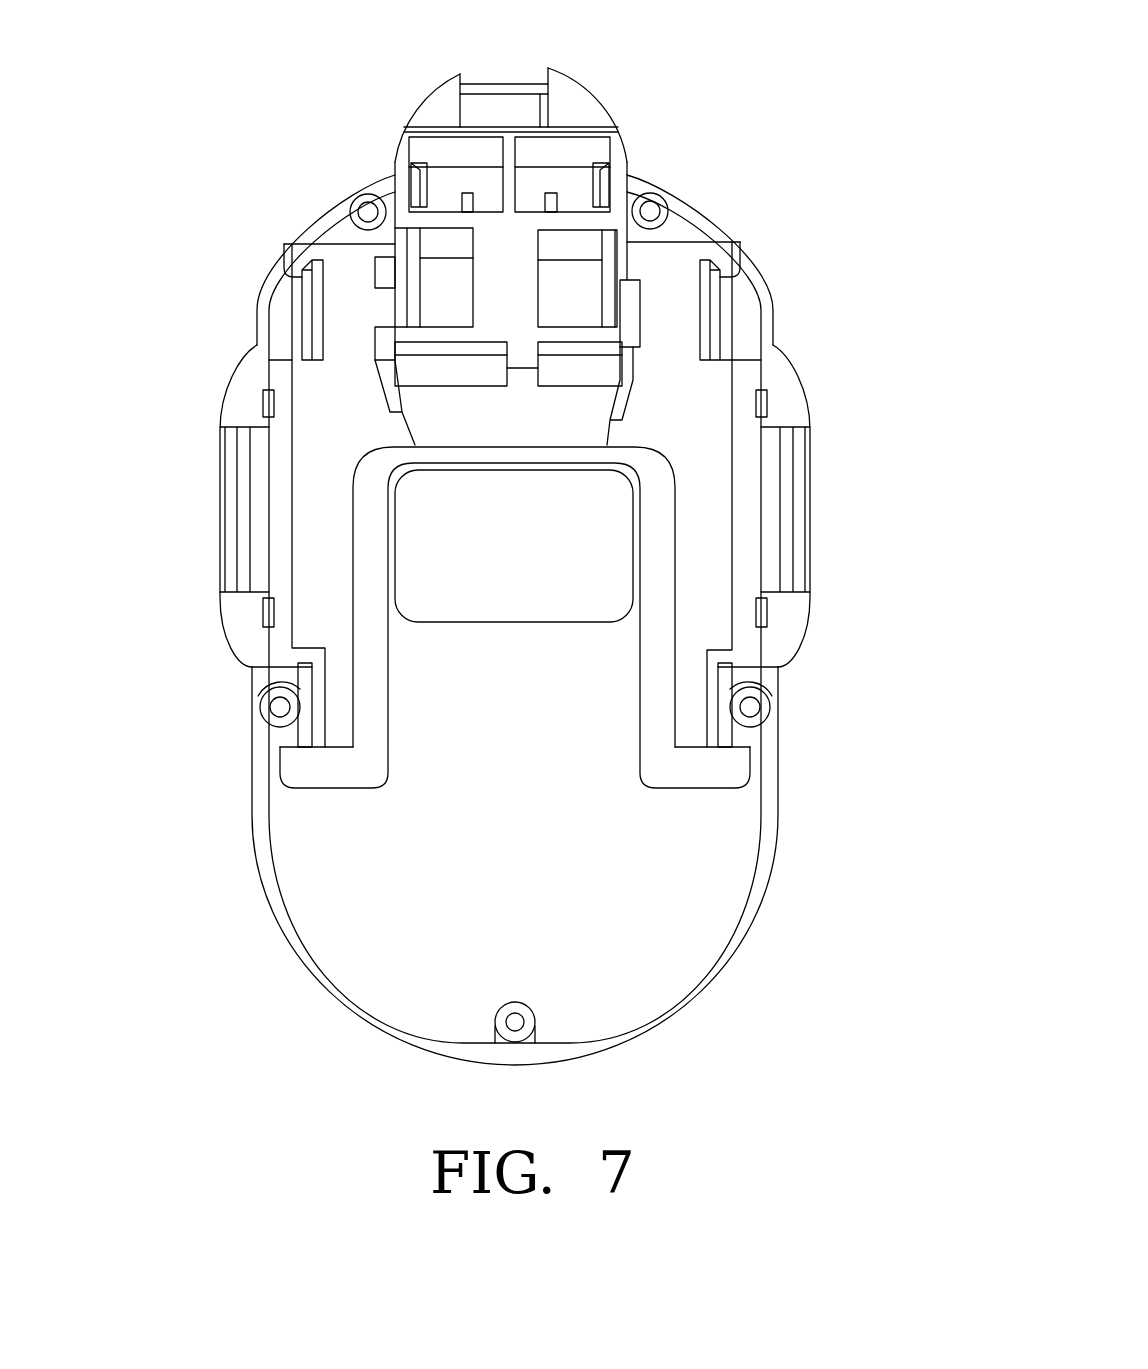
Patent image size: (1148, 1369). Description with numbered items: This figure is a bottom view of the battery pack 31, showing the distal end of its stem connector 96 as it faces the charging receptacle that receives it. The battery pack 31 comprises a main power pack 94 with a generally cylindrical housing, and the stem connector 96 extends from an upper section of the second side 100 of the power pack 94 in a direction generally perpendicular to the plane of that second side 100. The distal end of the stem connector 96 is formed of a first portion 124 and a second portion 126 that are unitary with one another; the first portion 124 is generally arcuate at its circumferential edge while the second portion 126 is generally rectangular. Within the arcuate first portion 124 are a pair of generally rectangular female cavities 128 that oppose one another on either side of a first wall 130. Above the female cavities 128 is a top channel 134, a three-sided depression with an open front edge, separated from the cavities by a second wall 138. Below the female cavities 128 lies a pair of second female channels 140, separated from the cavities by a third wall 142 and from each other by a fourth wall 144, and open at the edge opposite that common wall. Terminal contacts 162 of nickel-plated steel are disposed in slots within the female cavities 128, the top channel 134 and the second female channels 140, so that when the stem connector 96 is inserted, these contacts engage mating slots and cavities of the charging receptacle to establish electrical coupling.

The battery pack 31 is at (780, 120).
The power pack 94 is at (246, 790).
The stem connector 96 is at (616, 90).
The second side 100 is at (595, 846).
The first portion 124 is at (422, 98).
The second portion 126 is at (590, 377).
The female cavities 128 is at (452, 190).
The first wall 130 is at (505, 156).
The top channel 134 is at (523, 115).
The second wall 138 is at (570, 131).
The second female channels 140 is at (450, 288).
The third wall 142 is at (413, 219).
The fourth wall 144 is at (528, 292).
The terminal contacts 162 is at (497, 88).